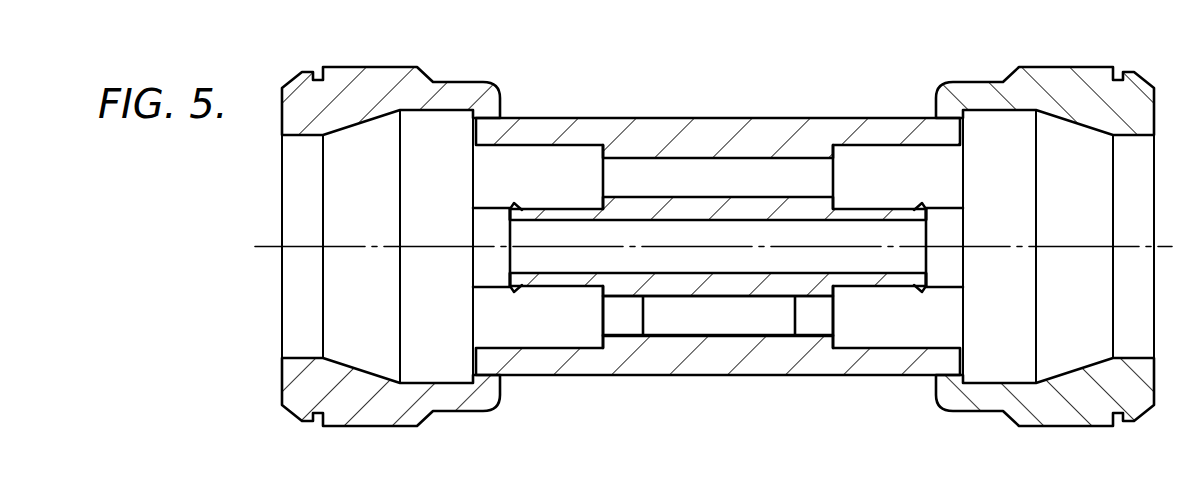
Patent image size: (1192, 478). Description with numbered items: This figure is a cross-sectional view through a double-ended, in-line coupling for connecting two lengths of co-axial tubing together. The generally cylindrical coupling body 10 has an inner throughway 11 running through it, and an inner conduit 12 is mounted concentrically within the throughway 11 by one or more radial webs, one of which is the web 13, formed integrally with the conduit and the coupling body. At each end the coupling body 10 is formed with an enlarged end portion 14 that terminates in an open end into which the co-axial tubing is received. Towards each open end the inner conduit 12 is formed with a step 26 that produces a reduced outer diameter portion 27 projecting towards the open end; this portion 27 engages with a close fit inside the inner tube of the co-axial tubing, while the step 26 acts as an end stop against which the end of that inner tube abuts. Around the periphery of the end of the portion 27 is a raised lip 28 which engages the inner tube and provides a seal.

The coupling body 10 is at (723, 118).
The inner throughway 11 is at (535, 150).
The inner conduit 12 is at (710, 197).
The radial web 13 is at (725, 323).
The enlarged end portion 14 is at (366, 77).
The step 26 is at (597, 202).
The reduced outer diameter portion 27 is at (537, 205).
The raised lip 28 is at (512, 207).